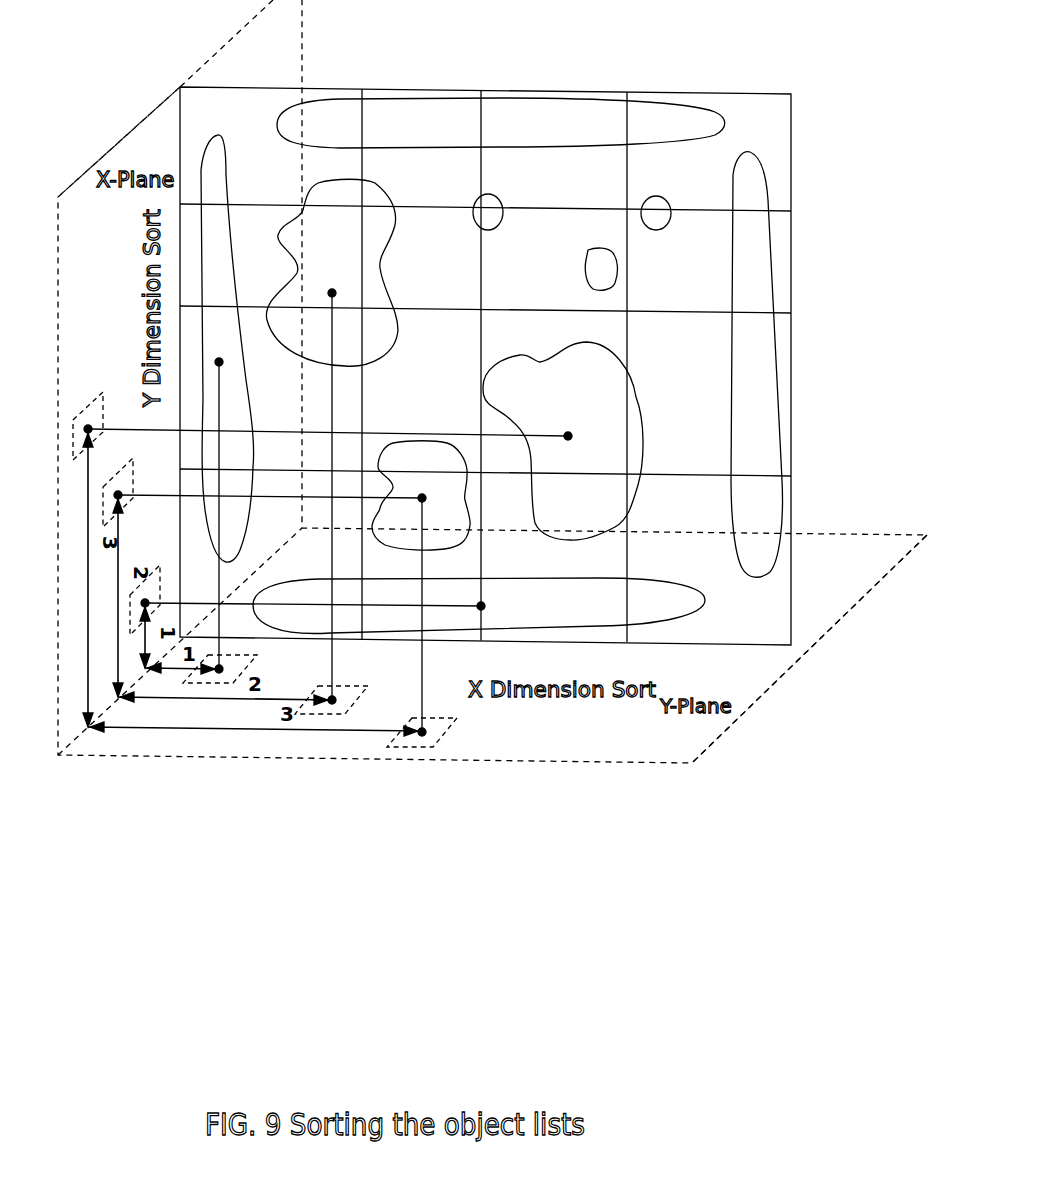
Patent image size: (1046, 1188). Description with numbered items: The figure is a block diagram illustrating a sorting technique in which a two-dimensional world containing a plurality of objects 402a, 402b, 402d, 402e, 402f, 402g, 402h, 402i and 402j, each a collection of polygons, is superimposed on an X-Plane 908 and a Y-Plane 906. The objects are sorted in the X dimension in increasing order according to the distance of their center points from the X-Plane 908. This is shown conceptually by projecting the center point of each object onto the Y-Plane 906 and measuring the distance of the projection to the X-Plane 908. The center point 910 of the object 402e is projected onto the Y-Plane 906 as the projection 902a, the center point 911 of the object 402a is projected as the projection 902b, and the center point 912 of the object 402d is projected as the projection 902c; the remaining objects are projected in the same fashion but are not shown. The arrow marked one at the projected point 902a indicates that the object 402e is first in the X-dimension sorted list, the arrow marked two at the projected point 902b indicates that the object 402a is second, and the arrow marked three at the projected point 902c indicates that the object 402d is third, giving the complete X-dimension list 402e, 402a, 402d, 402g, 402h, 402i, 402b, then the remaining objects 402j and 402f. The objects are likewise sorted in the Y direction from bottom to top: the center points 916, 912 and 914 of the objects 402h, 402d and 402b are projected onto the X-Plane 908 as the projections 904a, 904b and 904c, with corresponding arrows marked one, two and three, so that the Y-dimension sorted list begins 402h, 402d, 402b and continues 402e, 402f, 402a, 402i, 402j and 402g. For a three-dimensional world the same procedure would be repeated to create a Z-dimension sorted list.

The object 402a is at (355, 285).
The object 402b is at (585, 500).
The object 402d is at (445, 535).
The object 402e is at (250, 522).
The object 402f is at (778, 454).
The object 402g is at (553, 134).
The object 402h is at (535, 617).
The object 402i is at (537, 204).
The object 402j is at (644, 195).
The projection 902a is at (245, 669).
The projection 902b is at (354, 700).
The projection 902c is at (444, 732).
The projection 904a is at (160, 594).
The projection 904b is at (262, 484).
The projection 904c is at (104, 419).
The Y-Plane 906 is at (809, 649).
The X-Plane 908 is at (117, 142).
The center point 910 is at (236, 491).
The center point 911 is at (376, 484).
The center point 912 is at (429, 589).
The center point 914 is at (342, 415).
The center point 916 is at (331, 585).